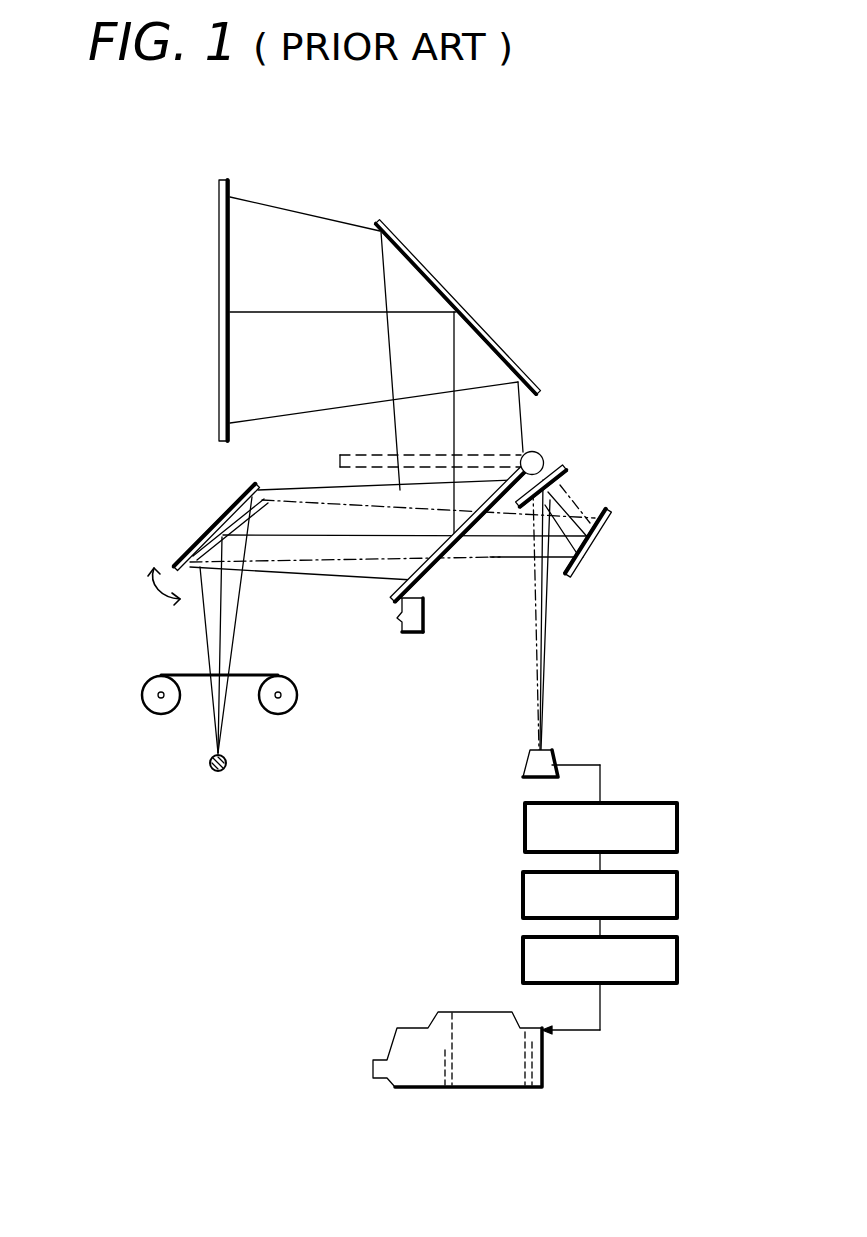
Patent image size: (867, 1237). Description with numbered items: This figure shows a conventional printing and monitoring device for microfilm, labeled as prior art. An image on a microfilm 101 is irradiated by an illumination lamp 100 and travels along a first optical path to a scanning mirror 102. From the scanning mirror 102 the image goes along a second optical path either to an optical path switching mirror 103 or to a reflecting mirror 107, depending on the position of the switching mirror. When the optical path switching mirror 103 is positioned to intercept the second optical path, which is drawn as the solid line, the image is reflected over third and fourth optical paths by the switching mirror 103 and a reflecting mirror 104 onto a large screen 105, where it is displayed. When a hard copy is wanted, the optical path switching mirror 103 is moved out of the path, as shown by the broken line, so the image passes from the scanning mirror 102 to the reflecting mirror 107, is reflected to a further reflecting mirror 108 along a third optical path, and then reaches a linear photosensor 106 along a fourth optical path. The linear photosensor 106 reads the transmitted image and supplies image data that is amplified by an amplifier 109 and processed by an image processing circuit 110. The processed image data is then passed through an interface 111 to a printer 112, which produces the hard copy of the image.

The illumination lamp 100 is at (222, 771).
The microfilm 101 is at (298, 690).
The scanning mirror 102 is at (210, 532).
The optical path switching mirror 103 is at (343, 454).
The reflecting mirror 104 is at (424, 264).
The large screen 105 is at (218, 268).
The linear photosensor 106 is at (545, 750).
The reflecting mirror 107 is at (600, 540).
The reflecting mirror 108 is at (567, 470).
The amplifier 109 is at (679, 822).
The image processing circuit 110 is at (679, 894).
The interface 111 is at (679, 957).
The printer 112 is at (455, 1012).